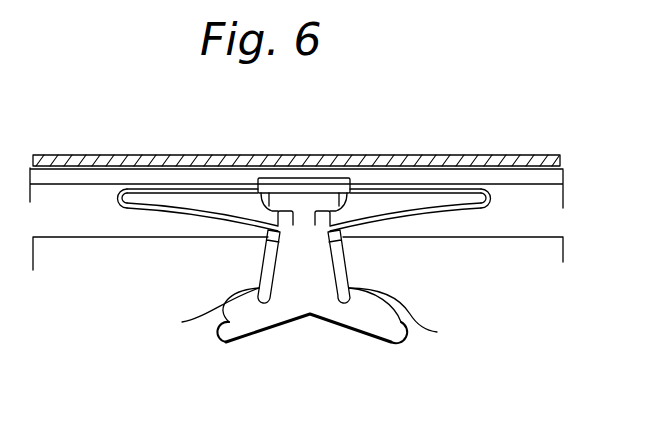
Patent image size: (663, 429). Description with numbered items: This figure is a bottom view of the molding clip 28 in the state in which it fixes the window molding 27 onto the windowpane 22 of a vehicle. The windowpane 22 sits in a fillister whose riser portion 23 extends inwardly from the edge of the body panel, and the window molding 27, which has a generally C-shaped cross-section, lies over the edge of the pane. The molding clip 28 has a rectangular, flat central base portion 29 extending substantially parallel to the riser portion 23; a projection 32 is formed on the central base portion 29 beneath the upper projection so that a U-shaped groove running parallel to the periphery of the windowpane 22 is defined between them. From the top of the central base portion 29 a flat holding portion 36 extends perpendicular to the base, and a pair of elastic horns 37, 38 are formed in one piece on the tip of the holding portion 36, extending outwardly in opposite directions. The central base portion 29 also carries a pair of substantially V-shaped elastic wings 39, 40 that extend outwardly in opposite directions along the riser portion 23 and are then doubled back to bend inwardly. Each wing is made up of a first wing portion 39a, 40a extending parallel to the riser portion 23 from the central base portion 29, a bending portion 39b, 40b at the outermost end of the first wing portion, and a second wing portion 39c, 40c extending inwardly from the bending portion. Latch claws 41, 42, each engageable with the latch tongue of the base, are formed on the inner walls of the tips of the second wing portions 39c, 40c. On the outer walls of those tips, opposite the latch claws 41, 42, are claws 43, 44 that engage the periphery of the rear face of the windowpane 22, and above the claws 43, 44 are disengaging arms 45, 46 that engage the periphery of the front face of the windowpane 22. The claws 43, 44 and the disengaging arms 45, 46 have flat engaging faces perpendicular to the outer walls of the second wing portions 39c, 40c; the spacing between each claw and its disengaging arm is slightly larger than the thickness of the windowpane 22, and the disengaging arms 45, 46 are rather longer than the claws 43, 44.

The windowpane 22 is at (557, 242).
The riser portion 23 is at (512, 158).
The window molding 27 is at (551, 178).
The molding clip 28 is at (308, 249).
The central base portion 29 is at (342, 196).
The projection 32 is at (332, 190).
The holding portion 36 is at (308, 339).
The elastic horn 37 is at (390, 341).
The elastic horn 38 is at (229, 342).
The elastic wing 39 is at (431, 192).
The first wing portion 39a is at (432, 196).
The bending portion 39b is at (490, 210).
The second wing portion 39c is at (395, 221).
The elastic wing 40 is at (180, 189).
The first wing portion 40a is at (222, 191).
The bending portion 40b is at (117, 199).
The second wing portion 40c is at (218, 217).
The latch claw 41 is at (316, 216).
The latch claw 42 is at (266, 195).
The claw 43 is at (343, 243).
The claw 44 is at (268, 240).
The disengaging arm 45 is at (409, 315).
The disengaging arm 46 is at (203, 310).